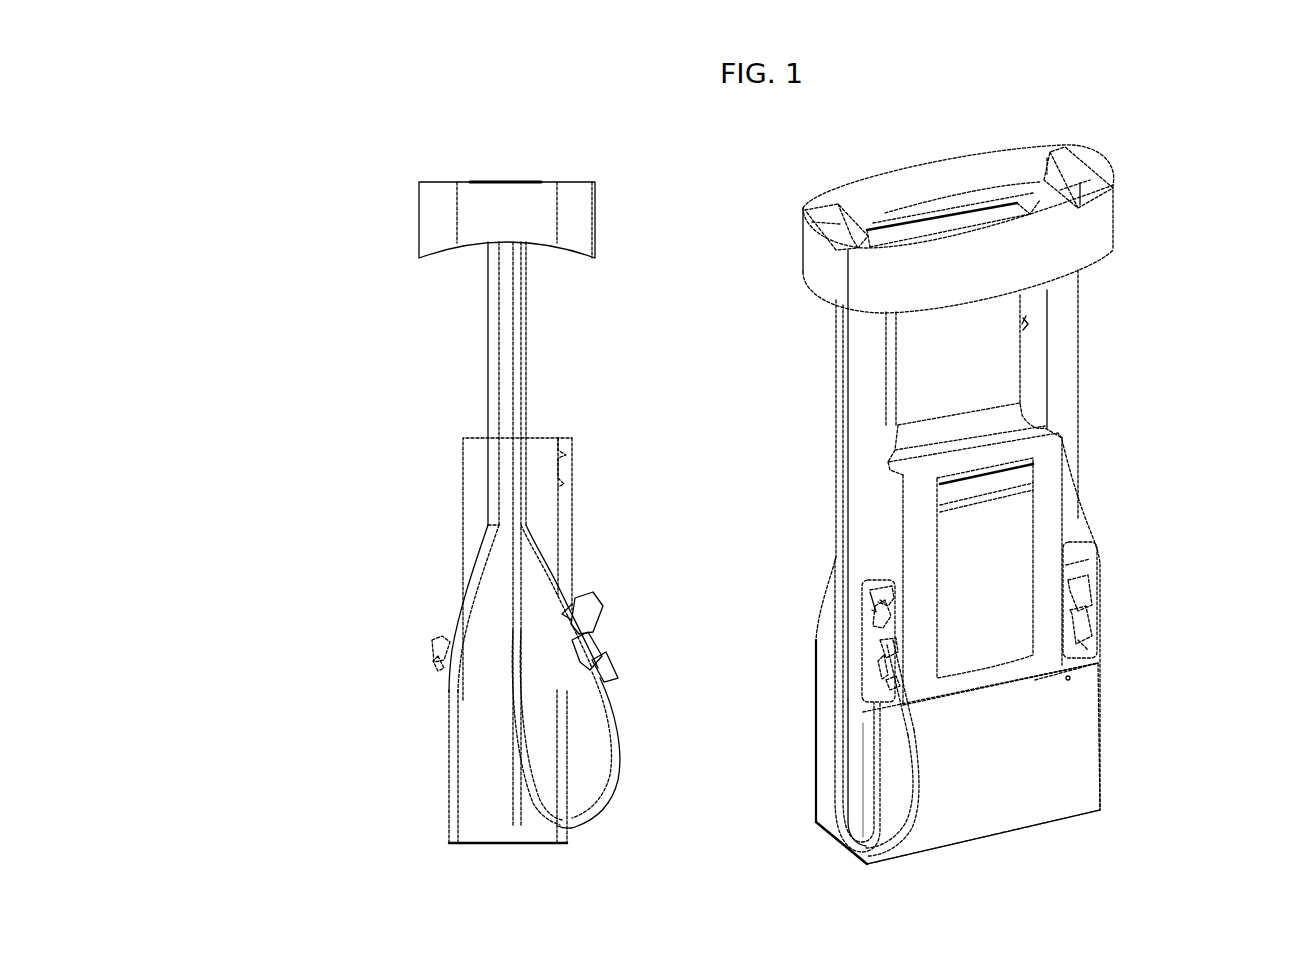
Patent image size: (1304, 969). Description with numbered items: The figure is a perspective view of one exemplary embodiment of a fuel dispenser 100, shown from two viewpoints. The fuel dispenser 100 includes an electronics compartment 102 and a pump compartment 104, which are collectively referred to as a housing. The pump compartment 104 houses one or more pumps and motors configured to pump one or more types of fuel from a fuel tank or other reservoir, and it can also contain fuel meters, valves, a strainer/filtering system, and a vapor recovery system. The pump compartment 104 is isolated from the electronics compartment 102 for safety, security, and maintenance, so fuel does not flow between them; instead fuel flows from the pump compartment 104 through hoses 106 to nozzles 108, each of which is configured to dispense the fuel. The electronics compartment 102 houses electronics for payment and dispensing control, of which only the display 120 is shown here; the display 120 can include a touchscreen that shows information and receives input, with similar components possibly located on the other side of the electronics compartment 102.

The fuel dispenser 100 is at (236, 197).
The electronics compartment 102 is at (1060, 500).
The pump compartment 104 is at (1060, 748).
The hoses 106 is at (495, 695).
The nozzles 108 is at (874, 606).
The display 120 is at (957, 546).